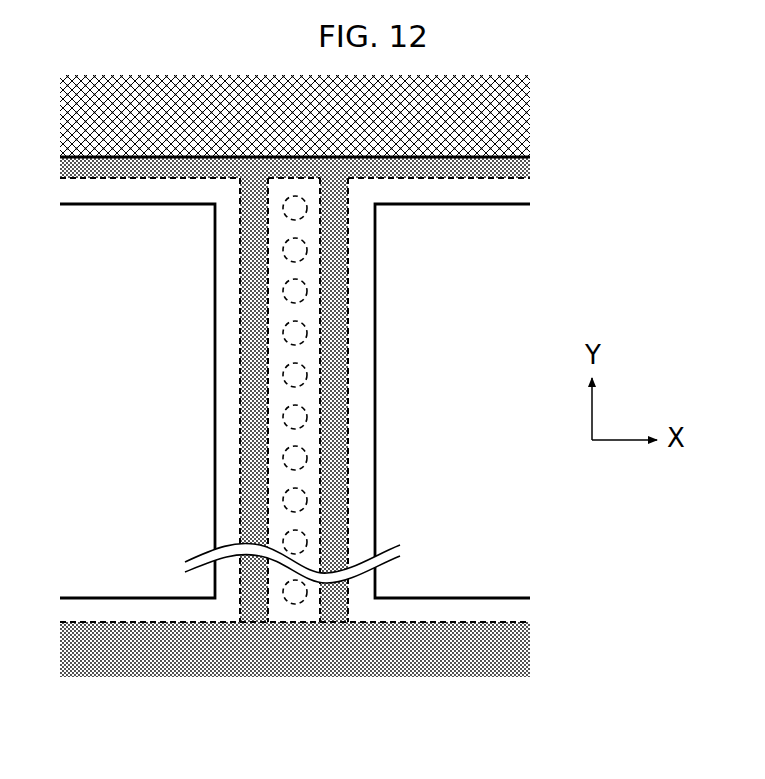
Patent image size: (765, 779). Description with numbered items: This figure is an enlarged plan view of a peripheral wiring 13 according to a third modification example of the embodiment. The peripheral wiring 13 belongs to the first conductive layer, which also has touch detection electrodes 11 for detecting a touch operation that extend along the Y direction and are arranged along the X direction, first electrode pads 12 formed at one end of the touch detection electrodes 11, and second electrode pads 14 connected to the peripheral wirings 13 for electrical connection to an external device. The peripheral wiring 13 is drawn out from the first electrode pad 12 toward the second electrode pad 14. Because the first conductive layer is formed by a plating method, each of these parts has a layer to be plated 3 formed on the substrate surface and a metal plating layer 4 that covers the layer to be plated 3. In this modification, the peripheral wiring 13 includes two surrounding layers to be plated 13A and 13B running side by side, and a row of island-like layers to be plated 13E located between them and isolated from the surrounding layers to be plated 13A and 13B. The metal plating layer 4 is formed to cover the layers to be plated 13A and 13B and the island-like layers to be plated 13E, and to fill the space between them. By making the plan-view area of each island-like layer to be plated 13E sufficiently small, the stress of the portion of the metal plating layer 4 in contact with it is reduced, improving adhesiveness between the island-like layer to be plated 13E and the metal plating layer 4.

The layer to be plated 3 is at (247, 268).
The metal plating layer 4 is at (228, 317).
The touch detection electrode 11 is at (510, 122).
The first electrode pad 12 is at (510, 191).
The peripheral wiring 13 is at (308, 400).
The layer to be plated 13A is at (245, 380).
The layer to be plated 13B is at (345, 375).
The island-like layer to be plated 13E is at (283, 455).
The second electrode pad 14 is at (512, 612).